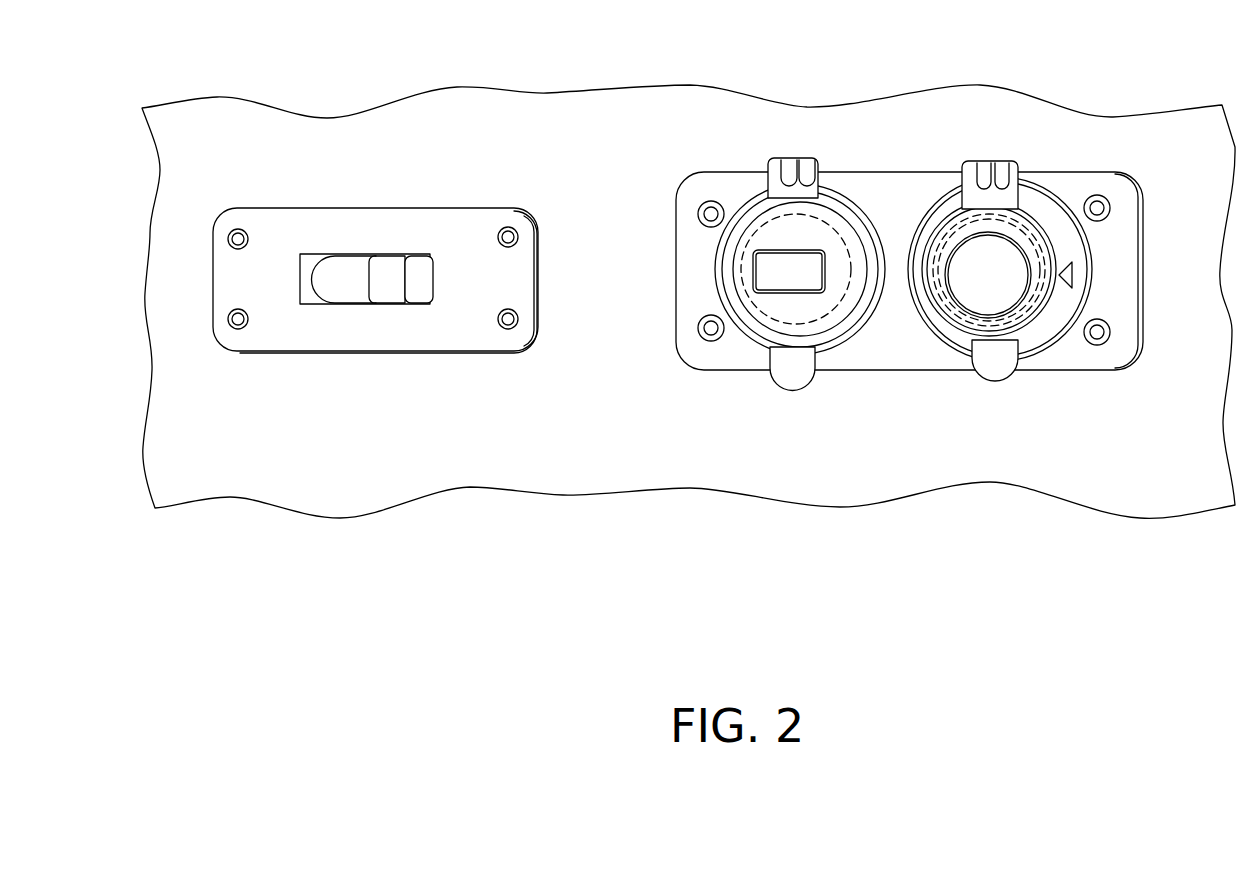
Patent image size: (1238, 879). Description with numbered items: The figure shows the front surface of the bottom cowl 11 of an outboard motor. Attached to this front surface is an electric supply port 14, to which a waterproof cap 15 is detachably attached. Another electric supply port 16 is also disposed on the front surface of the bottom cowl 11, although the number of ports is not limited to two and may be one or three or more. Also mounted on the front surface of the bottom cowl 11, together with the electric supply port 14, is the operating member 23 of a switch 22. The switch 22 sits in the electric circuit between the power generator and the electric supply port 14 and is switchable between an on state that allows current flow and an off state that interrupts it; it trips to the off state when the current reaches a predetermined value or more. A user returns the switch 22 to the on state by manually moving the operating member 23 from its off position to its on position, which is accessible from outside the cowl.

The bottom cowl 11 is at (665, 434).
The electric supply port 14 is at (950, 219).
The waterproof cap 15 is at (1038, 211).
The electric supply port 16 is at (822, 220).
The switch 22 is at (385, 173).
The operating member 23 is at (394, 291).